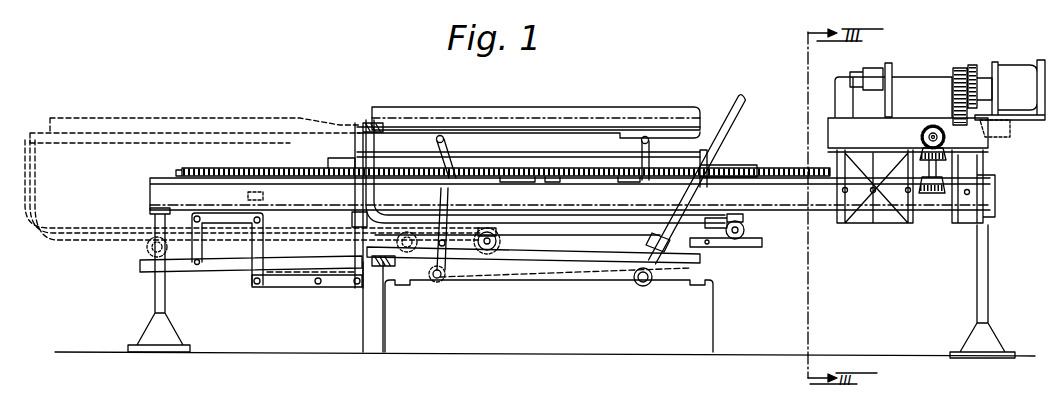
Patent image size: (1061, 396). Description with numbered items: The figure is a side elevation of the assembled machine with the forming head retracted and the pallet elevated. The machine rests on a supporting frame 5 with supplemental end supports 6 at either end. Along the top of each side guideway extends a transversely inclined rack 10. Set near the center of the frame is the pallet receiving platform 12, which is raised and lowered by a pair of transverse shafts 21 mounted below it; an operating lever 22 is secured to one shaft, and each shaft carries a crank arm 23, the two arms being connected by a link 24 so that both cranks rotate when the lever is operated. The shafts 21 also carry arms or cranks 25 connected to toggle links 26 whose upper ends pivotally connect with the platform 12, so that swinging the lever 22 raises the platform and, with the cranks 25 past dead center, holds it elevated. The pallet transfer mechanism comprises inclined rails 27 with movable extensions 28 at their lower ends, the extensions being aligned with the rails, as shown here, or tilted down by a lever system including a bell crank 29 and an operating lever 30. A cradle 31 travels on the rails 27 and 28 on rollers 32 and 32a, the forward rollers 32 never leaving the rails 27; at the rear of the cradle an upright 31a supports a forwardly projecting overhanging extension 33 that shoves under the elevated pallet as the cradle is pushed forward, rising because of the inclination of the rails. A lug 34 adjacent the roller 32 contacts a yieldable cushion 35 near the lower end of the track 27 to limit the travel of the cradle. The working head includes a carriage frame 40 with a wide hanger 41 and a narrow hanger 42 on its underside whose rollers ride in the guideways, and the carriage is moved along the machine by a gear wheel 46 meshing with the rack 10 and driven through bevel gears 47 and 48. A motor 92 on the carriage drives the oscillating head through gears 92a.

The supporting frame 5 is at (400, 280).
The supplemental end supports 6 is at (162, 298).
The rack 10 is at (200, 167).
The pallet receiving platform 12 is at (627, 133).
The transverse shafts 21 is at (441, 282).
The operating lever 22 is at (733, 118).
The crank arm 23 is at (468, 275).
The link 24 is at (563, 262).
The arms or cranks 25 is at (637, 256).
The toggle links 26 is at (445, 147).
The inclined rails 27 is at (218, 118).
The movable extensions 28 is at (223, 266).
The bell crank 29 is at (257, 248).
The operating lever 30 is at (355, 219).
The cradle 31 is at (545, 185).
The upright 31a is at (360, 150).
The rollers 32 is at (746, 231).
The rollers 32a is at (147, 252).
The overhanging extension 33 is at (445, 127).
The lug 34 is at (744, 248).
The yieldable cushion 35 is at (392, 266).
The carriage frame 40 is at (908, 107).
The wide hanger 41 is at (862, 222).
The narrow hanger 42 is at (958, 222).
The gear wheel 46 is at (925, 200).
The bevel gear 47 is at (943, 132).
The bevel gear 48 is at (950, 150).
The motor 92 is at (1010, 98).
The gears 92a is at (977, 65).